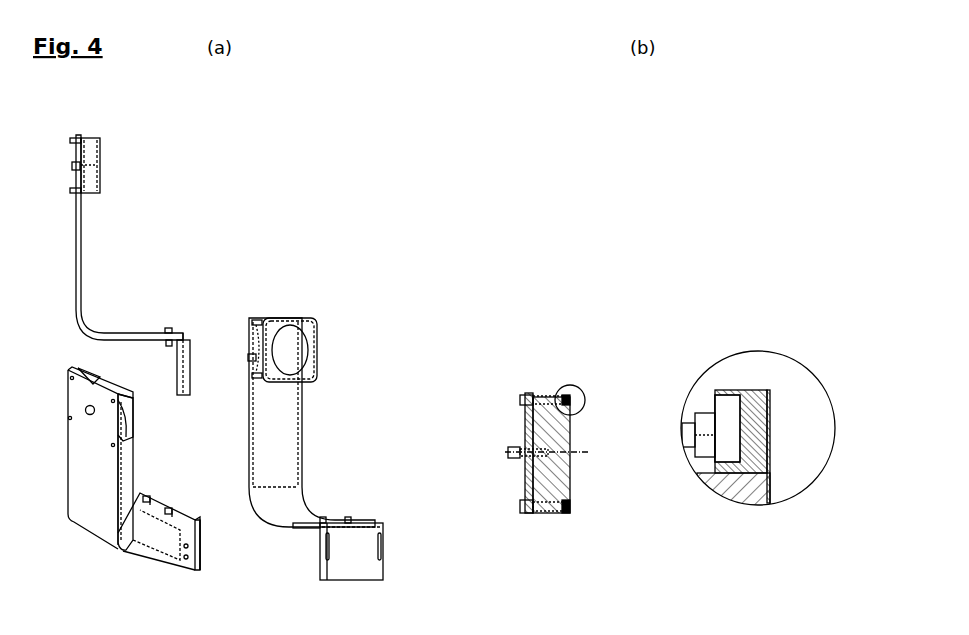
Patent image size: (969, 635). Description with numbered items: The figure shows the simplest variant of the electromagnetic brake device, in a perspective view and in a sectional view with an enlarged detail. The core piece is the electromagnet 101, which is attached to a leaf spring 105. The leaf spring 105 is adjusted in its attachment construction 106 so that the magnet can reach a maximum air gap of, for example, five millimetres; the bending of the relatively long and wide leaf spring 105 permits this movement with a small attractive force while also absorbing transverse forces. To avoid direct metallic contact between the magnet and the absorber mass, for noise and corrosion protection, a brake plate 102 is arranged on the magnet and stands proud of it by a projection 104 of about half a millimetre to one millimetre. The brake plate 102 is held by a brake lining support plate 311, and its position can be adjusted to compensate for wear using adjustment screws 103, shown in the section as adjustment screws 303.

The electromagnet 101 is at (85, 182).
The brake plate 102 is at (100, 135).
The adjustment screws for brake plate 103 is at (250, 357).
The projection of the brake plate beyond magnets 104 is at (572, 423).
The leaf spring 105 is at (78, 282).
The attachment construction 106 is at (250, 549).
The adjustment screws for brake plate/brake lining 303 is at (610, 494).
The brake lining support plate 311 is at (730, 430).